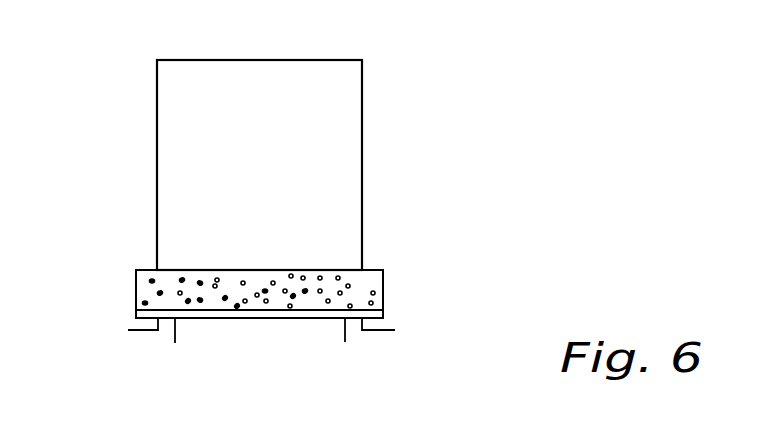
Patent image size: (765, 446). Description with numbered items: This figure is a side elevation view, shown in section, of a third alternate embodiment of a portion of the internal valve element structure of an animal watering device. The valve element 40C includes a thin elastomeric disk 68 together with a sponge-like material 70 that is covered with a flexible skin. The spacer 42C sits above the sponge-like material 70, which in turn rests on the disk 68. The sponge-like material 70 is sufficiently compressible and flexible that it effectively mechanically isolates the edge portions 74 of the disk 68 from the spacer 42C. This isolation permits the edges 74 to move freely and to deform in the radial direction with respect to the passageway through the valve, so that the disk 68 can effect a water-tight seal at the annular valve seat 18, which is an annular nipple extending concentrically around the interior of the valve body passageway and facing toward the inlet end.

The spacer 42C is at (294, 184).
The valve element 40C is at (387, 277).
The sponge-like material 70 is at (363, 288).
The thin elastomeric disk 68 is at (384, 312).
The edge portions of disk 74 is at (135, 313).
The annular valve seat 18 is at (352, 325).